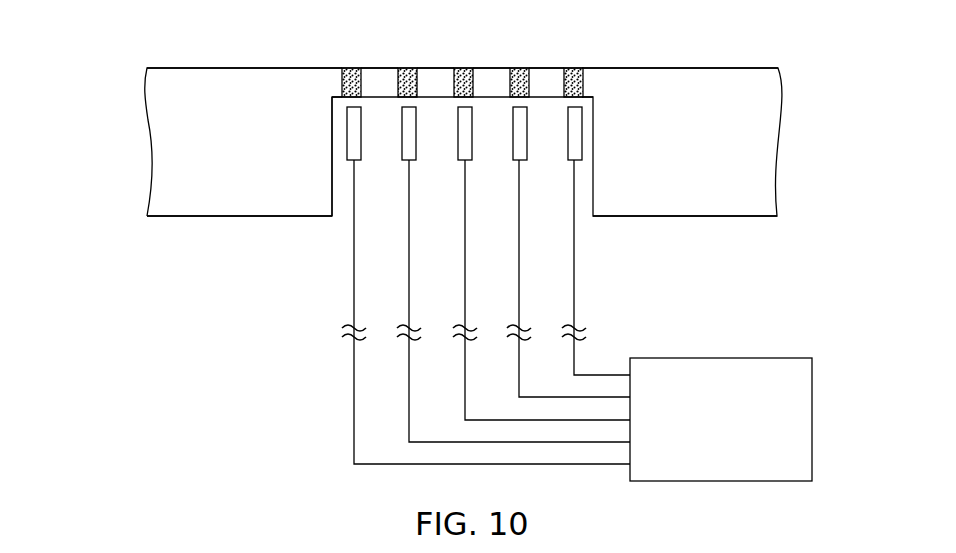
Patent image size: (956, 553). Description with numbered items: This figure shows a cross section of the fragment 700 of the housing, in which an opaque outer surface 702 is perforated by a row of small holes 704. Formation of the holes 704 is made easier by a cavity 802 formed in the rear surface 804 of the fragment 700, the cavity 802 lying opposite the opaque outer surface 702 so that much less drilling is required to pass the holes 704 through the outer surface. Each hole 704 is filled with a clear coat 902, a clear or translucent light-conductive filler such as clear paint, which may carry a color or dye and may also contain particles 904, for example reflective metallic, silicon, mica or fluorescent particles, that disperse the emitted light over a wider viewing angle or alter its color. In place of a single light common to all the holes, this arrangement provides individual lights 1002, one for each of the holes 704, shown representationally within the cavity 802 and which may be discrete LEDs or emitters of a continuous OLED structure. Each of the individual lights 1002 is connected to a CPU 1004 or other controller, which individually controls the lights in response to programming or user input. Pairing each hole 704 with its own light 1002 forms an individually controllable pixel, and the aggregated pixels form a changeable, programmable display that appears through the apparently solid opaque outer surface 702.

The fragment 700 is at (143, 113).
The opaque outer surface 702 is at (273, 66).
The holes 704 is at (352, 66).
The cavity 802 is at (345, 191).
The rear surface 804 is at (333, 100).
The clear coat 902 is at (413, 66).
The particles 904 is at (522, 66).
The individual lights 1002 is at (357, 150).
The CPU 1004 is at (577, 320).